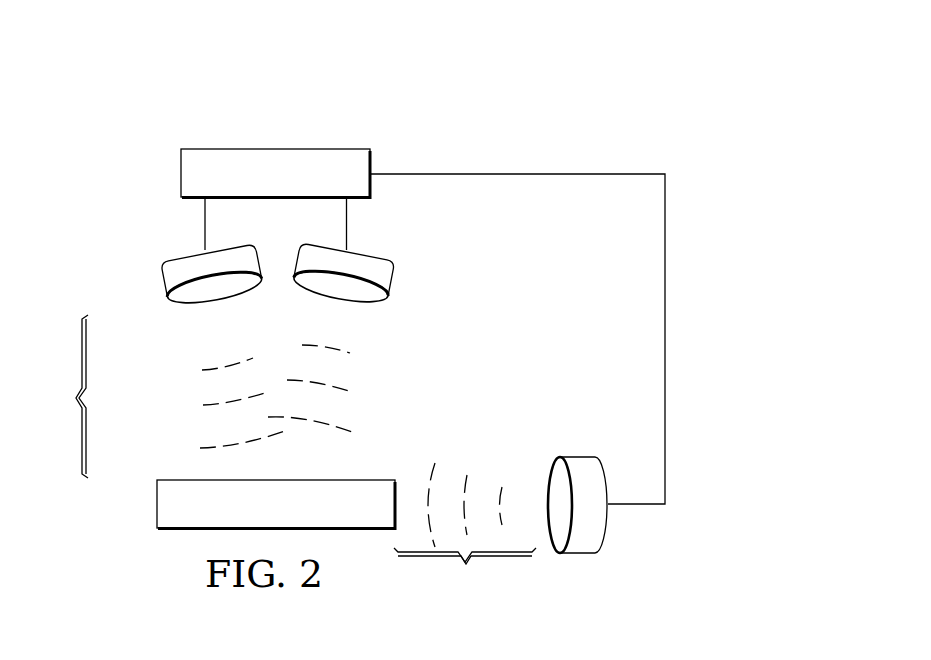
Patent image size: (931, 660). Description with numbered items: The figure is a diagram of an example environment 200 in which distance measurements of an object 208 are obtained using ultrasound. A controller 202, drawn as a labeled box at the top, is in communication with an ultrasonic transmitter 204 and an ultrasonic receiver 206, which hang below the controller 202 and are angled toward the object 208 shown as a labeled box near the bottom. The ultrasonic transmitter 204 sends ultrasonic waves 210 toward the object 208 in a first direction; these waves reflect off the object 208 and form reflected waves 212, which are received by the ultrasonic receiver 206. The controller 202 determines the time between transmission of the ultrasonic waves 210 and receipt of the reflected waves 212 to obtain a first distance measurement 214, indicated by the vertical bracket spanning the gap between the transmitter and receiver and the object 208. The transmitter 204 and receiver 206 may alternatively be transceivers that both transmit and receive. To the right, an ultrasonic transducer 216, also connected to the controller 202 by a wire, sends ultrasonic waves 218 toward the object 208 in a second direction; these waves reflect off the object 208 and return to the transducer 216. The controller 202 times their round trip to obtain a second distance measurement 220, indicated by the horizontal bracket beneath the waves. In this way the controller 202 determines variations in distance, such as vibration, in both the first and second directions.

The environment 200 is at (447, 83).
The controller 202 is at (181, 162).
The ultrasonic transmitter 204 is at (168, 294).
The ultrasonic receiver 206 is at (387, 294).
The object 208 is at (157, 503).
The ultrasonic waves 210 is at (237, 400).
The reflected waves 212 is at (333, 386).
The first distance measurement 214 is at (58, 396).
The ultrasonic transducer 216 is at (571, 553).
The ultrasonic waves 218 is at (465, 502).
The second distance measurement 220 is at (465, 573).